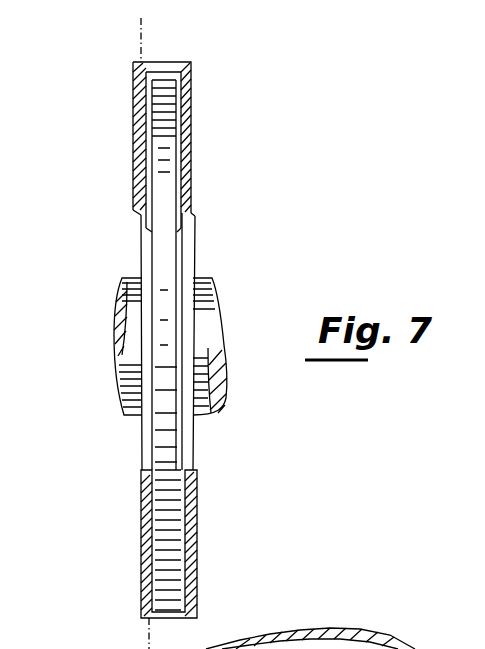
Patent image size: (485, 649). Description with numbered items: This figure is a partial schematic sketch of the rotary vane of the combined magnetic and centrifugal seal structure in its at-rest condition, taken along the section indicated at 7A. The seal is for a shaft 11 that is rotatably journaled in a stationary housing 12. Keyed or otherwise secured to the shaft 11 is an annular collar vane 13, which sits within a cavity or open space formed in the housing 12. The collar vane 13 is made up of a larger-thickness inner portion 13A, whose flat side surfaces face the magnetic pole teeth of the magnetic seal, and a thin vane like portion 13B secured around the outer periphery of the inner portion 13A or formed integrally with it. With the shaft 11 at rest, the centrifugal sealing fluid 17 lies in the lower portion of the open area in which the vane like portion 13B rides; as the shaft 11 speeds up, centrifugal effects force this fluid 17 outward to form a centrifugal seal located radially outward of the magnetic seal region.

The section line 7A is at (130, 38).
The shaft 11 is at (116, 322).
The housing 12 is at (118, 117).
The collar vane 13 is at (202, 247).
The inner portion 13A is at (139, 246).
The vane like portion 13B is at (163, 160).
The centrifugal sealing fluid 17 is at (190, 520).